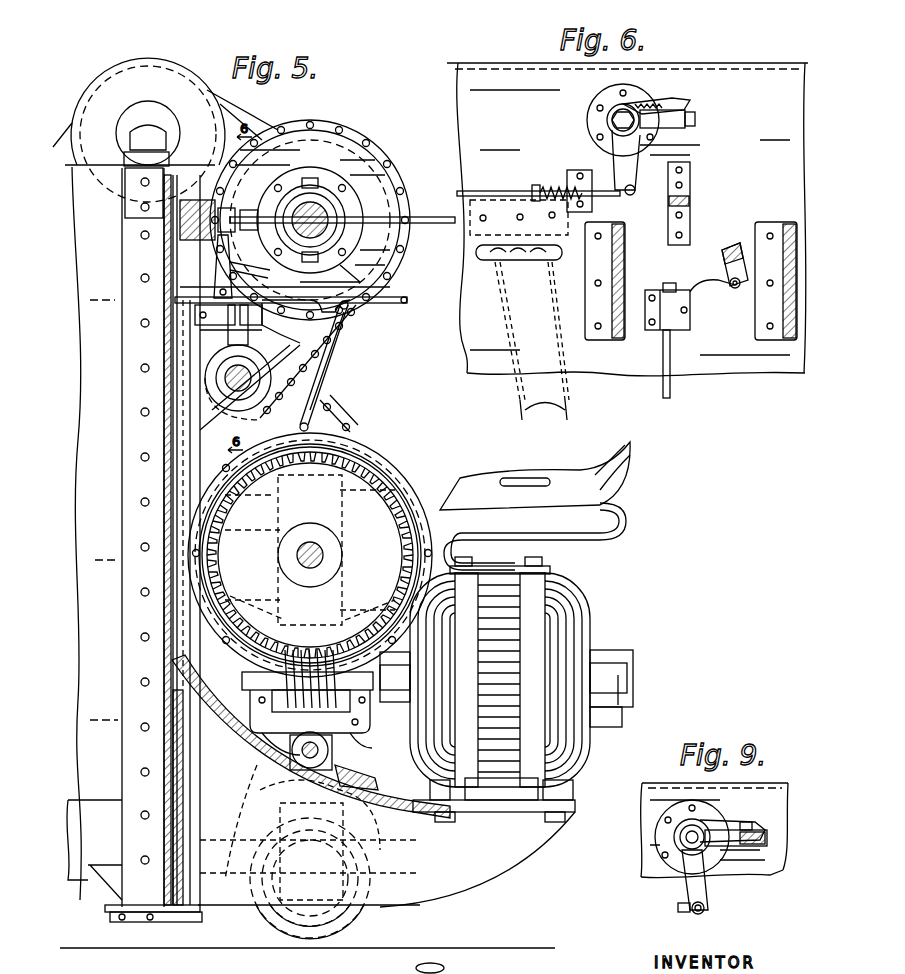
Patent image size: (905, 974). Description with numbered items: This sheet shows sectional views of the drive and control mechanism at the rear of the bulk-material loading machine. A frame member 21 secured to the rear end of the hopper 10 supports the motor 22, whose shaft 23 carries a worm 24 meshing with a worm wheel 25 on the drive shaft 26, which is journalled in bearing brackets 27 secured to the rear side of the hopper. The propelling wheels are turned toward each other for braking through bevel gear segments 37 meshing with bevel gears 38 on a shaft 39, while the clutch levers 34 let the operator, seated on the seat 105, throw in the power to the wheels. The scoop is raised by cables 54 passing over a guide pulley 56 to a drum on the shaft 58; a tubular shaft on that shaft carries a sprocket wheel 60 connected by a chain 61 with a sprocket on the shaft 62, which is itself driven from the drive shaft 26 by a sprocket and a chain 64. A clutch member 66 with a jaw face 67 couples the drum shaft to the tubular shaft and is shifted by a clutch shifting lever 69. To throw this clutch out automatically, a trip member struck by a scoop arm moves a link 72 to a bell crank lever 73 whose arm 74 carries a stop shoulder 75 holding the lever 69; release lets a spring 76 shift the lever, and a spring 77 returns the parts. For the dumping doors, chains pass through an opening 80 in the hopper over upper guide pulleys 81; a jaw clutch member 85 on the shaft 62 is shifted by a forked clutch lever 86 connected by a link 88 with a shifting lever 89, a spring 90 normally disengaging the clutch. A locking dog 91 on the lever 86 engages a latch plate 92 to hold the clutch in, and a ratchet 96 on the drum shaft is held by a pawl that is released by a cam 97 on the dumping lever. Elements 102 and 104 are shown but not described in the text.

In FIG. 5, the bin or hopper 10 is at (82, 466).
In FIG. 6, the bin or hopper 10 is at (650, 376).
In FIG. 5, the frame member 21 is at (532, 850).
In FIG. 5, the motor 22 is at (585, 620).
In FIG. 5, the shaft of the motor 23 is at (242, 678).
In FIG. 5, the worm 24 is at (318, 652).
In FIG. 5, the worm wheel 25 is at (388, 490).
In FIG. 5, the drive shaft 26 is at (300, 556).
In FIG. 5, the bearing brackets 27 is at (165, 526).
In FIG. 5, the clutch levers 34 is at (352, 336).
In FIG. 5, the bevel gear segments 37 is at (355, 778).
In FIG. 5, the bevel gears 38 is at (332, 740).
In FIG. 5, the shaft 39 is at (320, 752).
In FIG. 5, the cables 54 is at (258, 120).
In FIG. 5, the guide pulley 56 is at (112, 70).
In FIG. 5, the shaft 58 is at (330, 279).
In FIG. 5, the sprocket wheel 60 is at (396, 240).
In FIG. 5, the chain 61 is at (332, 378).
In FIG. 5, the shaft 62 is at (252, 340).
In FIG. 5, the chain 64 is at (352, 426).
In FIG. 5, the clutch member 66 is at (345, 196).
In FIG. 5, the jaw face 67 is at (443, 962).
In FIG. 5, the clutch shifting lever 69 is at (308, 178).
In FIG. 6, the clutch shifting lever 69 is at (695, 120).
In FIG. 9, the clutch shifting lever 69 is at (767, 838).
In FIG. 5, the link 72 is at (250, 266).
In FIG. 6, the link 72 is at (506, 191).
In FIG. 9, the link 72 is at (683, 912).
In FIG. 5, the bell crank lever 73 is at (224, 258).
In FIG. 6, the bell crank lever 73 is at (640, 160).
In FIG. 9, the bell crank lever 73 is at (688, 866).
In FIG. 6, the arm 74 is at (650, 104).
In FIG. 9, the arm 74 is at (732, 822).
In FIG. 9, the stop shoulder 75 is at (752, 826).
In FIG. 6, the spring 76 is at (672, 98).
In FIG. 6, the spring 77 is at (548, 186).
In FIG. 6, the opening 80 is at (482, 262).
In FIG. 6, the upper guide pulleys 81 is at (524, 246).
In FIG. 5, the jaw clutch member 85 is at (280, 340).
In FIG. 5, the forked clutch lever 86 is at (270, 323).
In FIG. 6, the forked clutch lever 86 is at (746, 236).
In FIG. 5, the link 88 is at (270, 288).
In FIG. 5, the shifting lever 89 is at (407, 300).
In FIG. 6, the spring 90 is at (690, 198).
In FIG. 6, the locking dog 91 is at (722, 286).
In FIG. 6, the latch plate 92 is at (680, 286).
In FIG. 5, the ratchet 96 is at (215, 315).
In FIG. 6, the cam 97 is at (671, 356).
In FIG. 5, the link 102 is at (346, 358).
In FIG. 5, the bearing 104 is at (388, 290).
In FIG. 5, the seat 105 is at (622, 474).